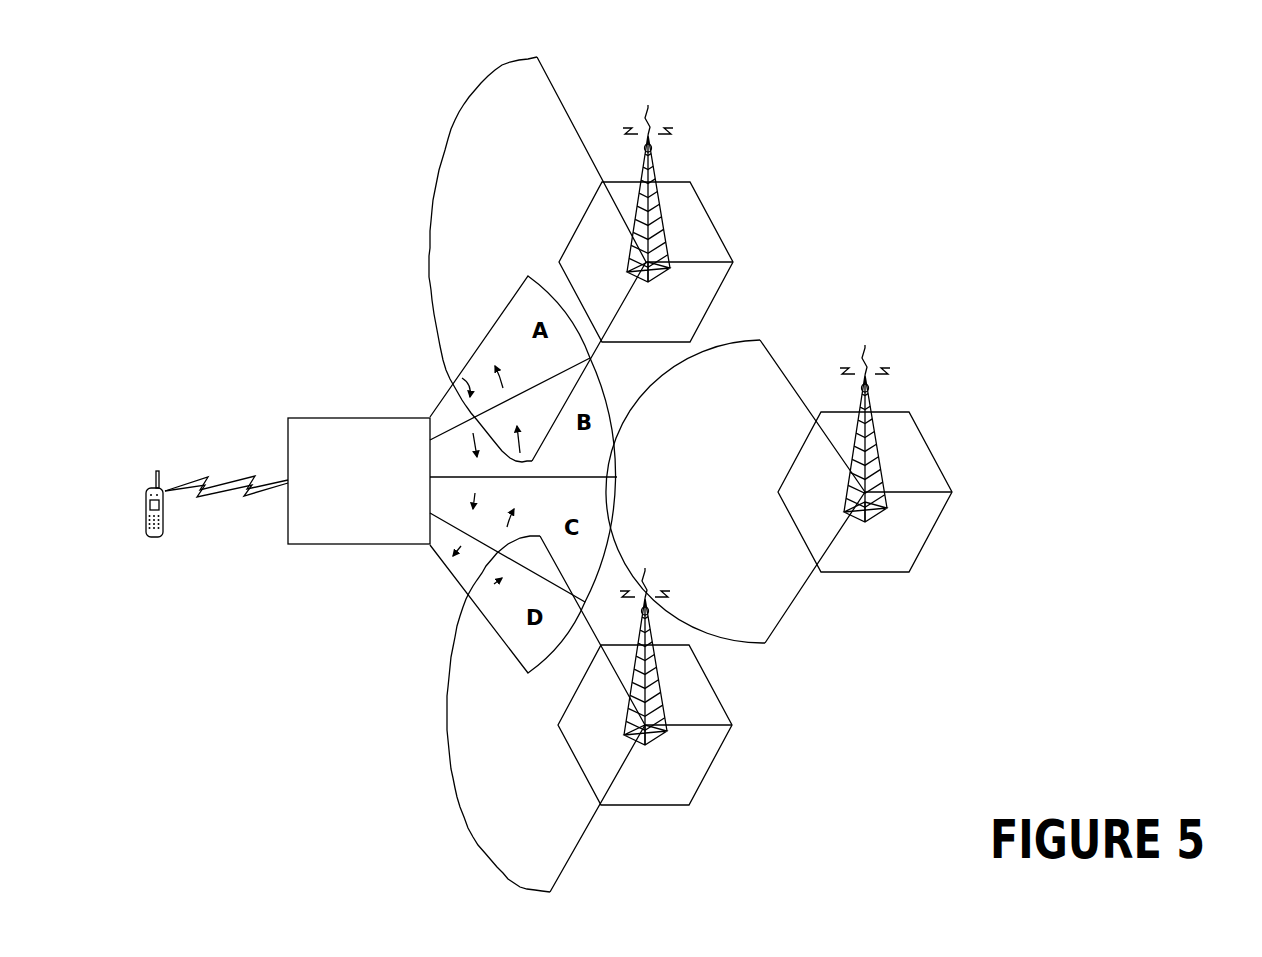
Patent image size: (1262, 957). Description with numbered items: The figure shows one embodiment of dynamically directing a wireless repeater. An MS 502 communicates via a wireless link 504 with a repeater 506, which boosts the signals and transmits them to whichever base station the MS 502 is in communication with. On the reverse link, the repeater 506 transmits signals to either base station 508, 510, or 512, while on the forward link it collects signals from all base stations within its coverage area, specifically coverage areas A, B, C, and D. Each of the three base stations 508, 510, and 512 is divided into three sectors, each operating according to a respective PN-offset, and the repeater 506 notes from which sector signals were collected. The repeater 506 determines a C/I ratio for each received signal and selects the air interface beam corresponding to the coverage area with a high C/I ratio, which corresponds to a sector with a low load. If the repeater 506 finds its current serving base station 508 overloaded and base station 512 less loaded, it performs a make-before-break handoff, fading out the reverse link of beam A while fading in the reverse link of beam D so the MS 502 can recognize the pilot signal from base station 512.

The MS 502 is at (146, 538).
The wireless link 504 is at (205, 479).
The repeater 506 is at (338, 508).
The base station 508 is at (725, 147).
The base station 510 is at (983, 406).
The base station 512 is at (756, 722).